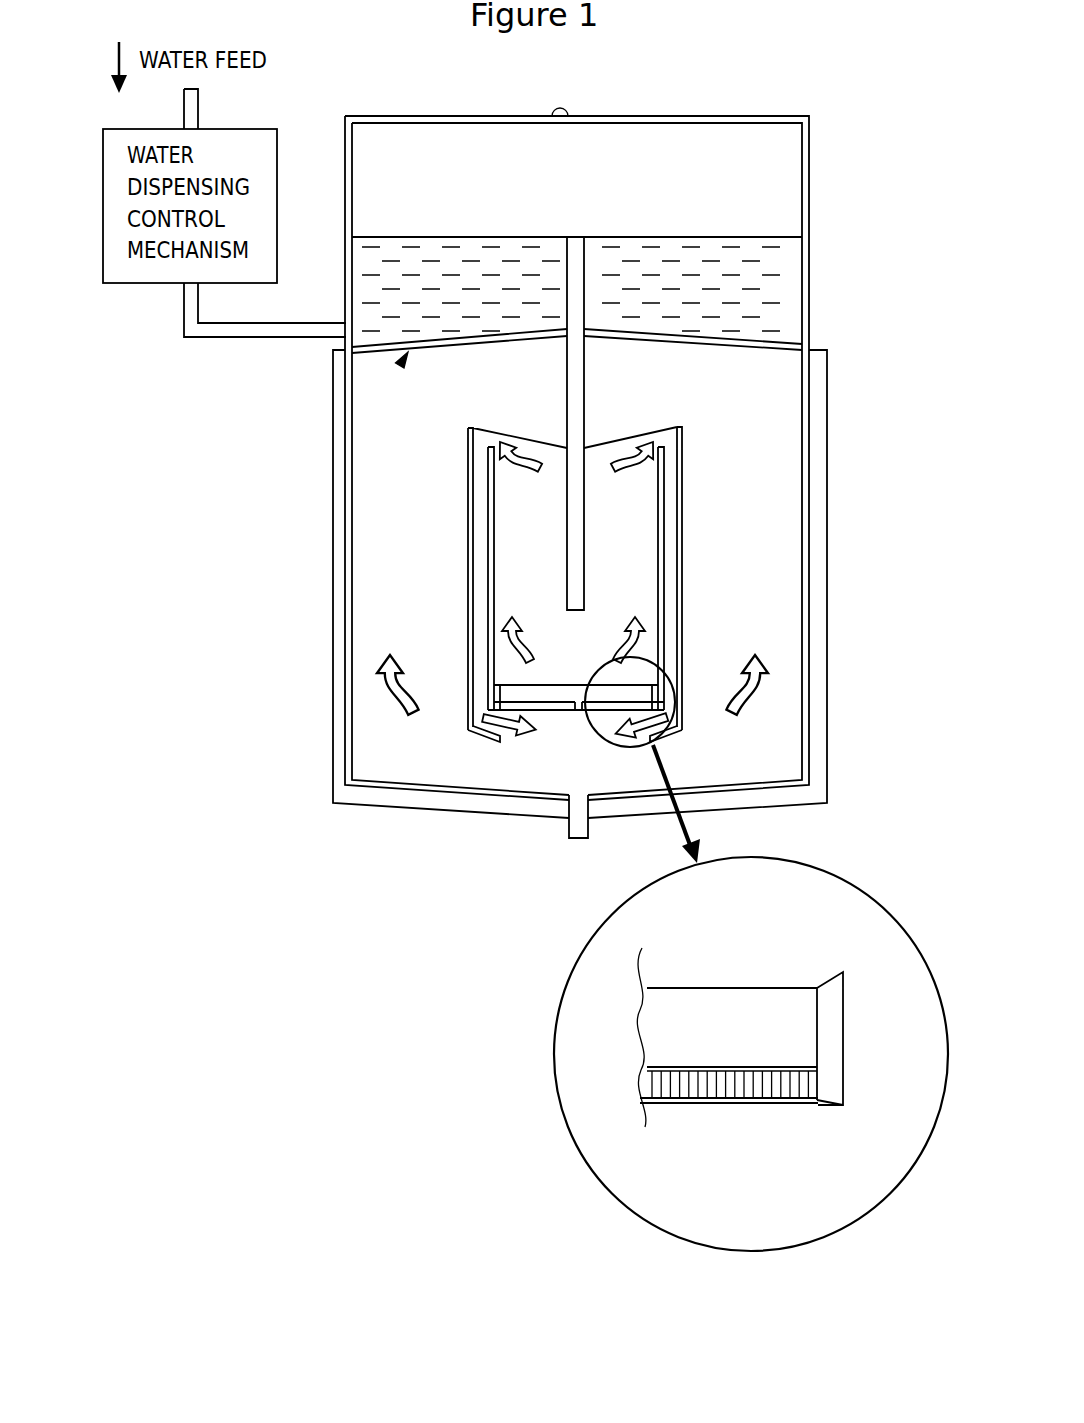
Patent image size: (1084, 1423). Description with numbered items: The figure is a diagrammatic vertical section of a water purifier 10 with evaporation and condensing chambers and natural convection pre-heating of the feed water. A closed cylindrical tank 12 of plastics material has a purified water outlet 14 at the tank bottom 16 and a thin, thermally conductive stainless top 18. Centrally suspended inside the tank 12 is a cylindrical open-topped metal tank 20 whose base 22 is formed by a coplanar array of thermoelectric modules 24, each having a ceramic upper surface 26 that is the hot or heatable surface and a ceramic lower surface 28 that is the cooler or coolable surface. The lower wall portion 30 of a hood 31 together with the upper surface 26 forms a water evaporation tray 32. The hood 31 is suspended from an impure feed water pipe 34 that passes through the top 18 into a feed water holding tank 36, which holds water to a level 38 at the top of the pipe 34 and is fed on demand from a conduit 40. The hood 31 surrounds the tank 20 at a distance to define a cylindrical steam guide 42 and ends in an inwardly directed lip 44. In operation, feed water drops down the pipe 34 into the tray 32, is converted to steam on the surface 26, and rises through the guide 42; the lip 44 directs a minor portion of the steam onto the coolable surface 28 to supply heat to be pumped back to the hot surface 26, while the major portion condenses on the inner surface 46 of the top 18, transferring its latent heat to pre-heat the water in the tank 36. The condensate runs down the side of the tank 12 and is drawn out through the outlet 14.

The water purifier 10 is at (196, 754).
The closed cylindrical tank 12 is at (818, 458).
The purified water outlet 14 is at (567, 828).
The tank bottom 16 is at (403, 785).
The top 18 is at (764, 341).
The open-topped metal tank 20 is at (658, 543).
The base 22 is at (537, 712).
The thermoelectric modules 24 is at (555, 705).
The upper surface 26 is at (717, 1063).
The lower surface 28 is at (788, 1098).
The lower wall portion 30 is at (830, 1018).
The hood 31 is at (670, 423).
The water evaporation tray 32 is at (633, 690).
The impure feed water pipe 34 is at (550, 413).
The feed water holding tank 36 is at (808, 197).
The level 38 is at (578, 237).
The conduit 40 is at (188, 340).
The steam guide 42 is at (480, 540).
The lip 44 is at (472, 733).
The inner surface 46 is at (405, 358).